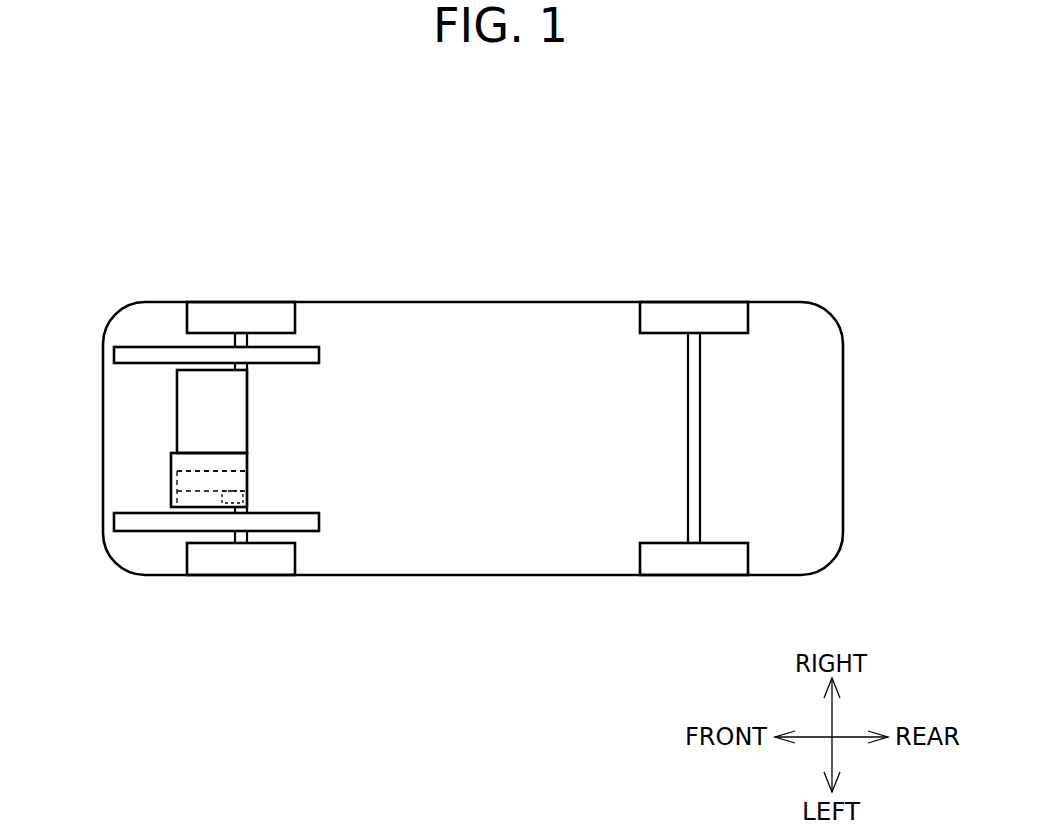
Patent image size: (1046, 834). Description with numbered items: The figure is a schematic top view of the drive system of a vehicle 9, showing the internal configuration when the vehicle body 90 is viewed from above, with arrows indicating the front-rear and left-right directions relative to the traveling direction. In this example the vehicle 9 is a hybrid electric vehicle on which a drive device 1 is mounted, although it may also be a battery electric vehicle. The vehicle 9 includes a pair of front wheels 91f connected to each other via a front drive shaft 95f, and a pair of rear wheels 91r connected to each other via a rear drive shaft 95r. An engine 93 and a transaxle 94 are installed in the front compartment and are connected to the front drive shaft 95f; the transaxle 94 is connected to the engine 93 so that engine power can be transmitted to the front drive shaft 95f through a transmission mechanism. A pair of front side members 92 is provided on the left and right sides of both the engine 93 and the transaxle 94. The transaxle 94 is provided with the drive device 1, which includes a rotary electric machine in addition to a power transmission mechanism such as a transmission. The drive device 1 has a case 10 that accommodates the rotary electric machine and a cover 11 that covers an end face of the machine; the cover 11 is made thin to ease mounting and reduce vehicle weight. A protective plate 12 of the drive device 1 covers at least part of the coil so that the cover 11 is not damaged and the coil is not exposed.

The drive device 1 is at (250, 474).
The vehicle 9 is at (660, 232).
The case 10 is at (173, 470).
The cover 11 is at (170, 493).
The protective plate 12 is at (243, 496).
The vehicle body 90 is at (827, 322).
The front wheels 91f is at (260, 313).
The rear wheels 91r is at (725, 313).
The front side members 92 is at (320, 353).
The engine 93 is at (190, 385).
The transaxle 94 is at (173, 452).
The front drive shaft 95f is at (248, 438).
The rear drive shaft 95r is at (702, 410).